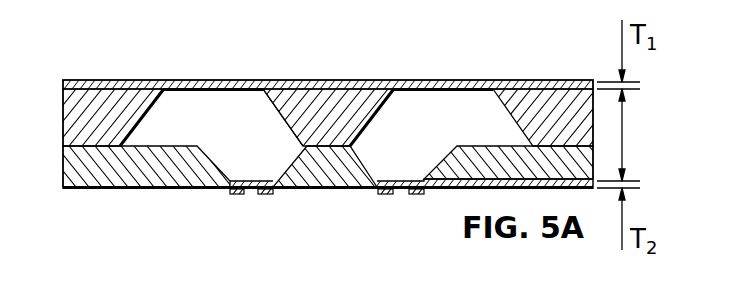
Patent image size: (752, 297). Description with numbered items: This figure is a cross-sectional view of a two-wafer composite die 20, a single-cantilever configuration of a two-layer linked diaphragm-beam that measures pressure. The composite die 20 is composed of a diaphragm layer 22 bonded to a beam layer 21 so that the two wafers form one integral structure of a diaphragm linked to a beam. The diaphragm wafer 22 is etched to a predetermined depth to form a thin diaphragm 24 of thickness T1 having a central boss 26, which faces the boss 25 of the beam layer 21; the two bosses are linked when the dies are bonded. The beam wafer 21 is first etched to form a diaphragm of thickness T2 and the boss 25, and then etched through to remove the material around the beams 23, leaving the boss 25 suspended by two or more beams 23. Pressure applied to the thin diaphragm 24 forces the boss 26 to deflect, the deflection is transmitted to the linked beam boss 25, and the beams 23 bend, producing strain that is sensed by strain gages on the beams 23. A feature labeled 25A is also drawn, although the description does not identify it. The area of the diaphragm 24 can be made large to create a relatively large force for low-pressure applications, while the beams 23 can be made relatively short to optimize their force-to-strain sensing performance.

The composite die 20 is at (164, 60).
The beam layer 21 is at (120, 188).
The diaphragm layer 22 is at (119, 80).
The beams 23 is at (252, 191).
The diaphragm 24 is at (433, 79).
The boss 25 is at (362, 141).
The slanted sidewall 25A is at (274, 111).
The central boss 26 is at (420, 195).